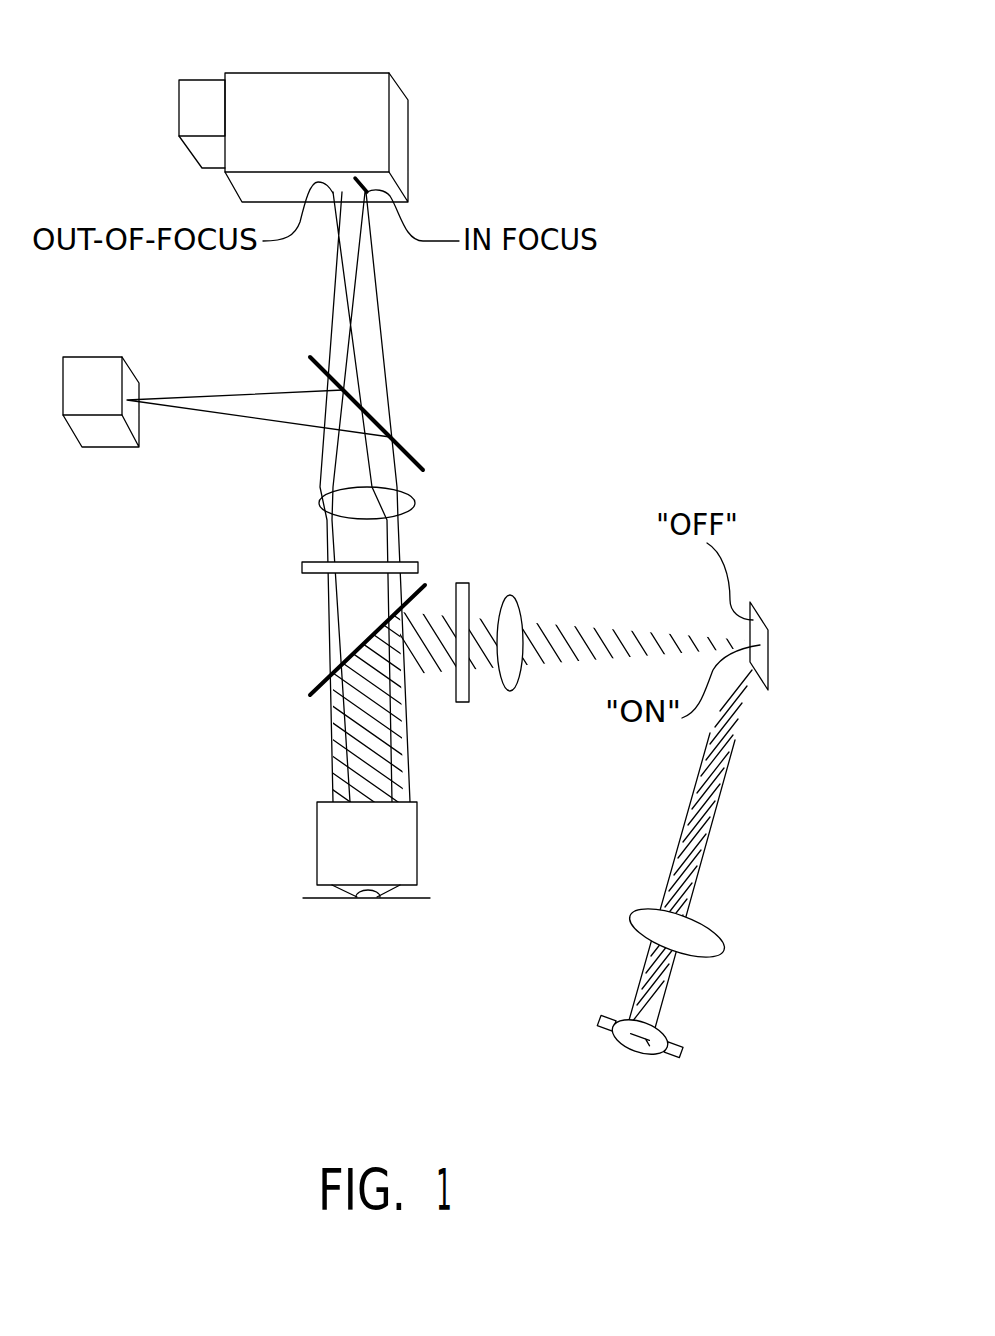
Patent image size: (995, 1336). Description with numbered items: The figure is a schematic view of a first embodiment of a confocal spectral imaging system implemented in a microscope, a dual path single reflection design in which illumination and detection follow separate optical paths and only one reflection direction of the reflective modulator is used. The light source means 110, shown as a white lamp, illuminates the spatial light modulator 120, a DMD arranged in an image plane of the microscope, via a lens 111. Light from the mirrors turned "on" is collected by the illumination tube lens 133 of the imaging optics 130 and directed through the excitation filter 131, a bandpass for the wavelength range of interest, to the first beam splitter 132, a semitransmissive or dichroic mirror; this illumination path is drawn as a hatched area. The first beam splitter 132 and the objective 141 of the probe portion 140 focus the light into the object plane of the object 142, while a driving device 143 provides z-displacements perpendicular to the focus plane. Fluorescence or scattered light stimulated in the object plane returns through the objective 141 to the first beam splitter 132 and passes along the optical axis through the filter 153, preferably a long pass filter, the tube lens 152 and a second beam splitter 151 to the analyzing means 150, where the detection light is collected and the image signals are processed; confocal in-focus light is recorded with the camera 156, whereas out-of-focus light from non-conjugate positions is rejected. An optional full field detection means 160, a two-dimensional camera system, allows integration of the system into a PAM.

The light source means 110 is at (778, 1072).
The lens 111 is at (702, 933).
The spatial light modulator (DMD) 120 is at (845, 656).
The imaging optics 130 is at (233, 678).
The excitation filter 131 is at (464, 583).
The first beam splitter 132 is at (310, 695).
The illumination tube lens 133 is at (507, 607).
The probe portion 140 is at (518, 869).
The objective 141 is at (340, 862).
The object 142 is at (363, 900).
The driving device 143 is at (427, 899).
The analyzing means 150 is at (560, 159).
The second beam splitter 151 is at (413, 455).
The tube lens 152 is at (318, 503).
The filter 153 is at (300, 566).
The camera 156 is at (200, 80).
The full field detection means (two-dimensional camera system) 160 is at (138, 428).